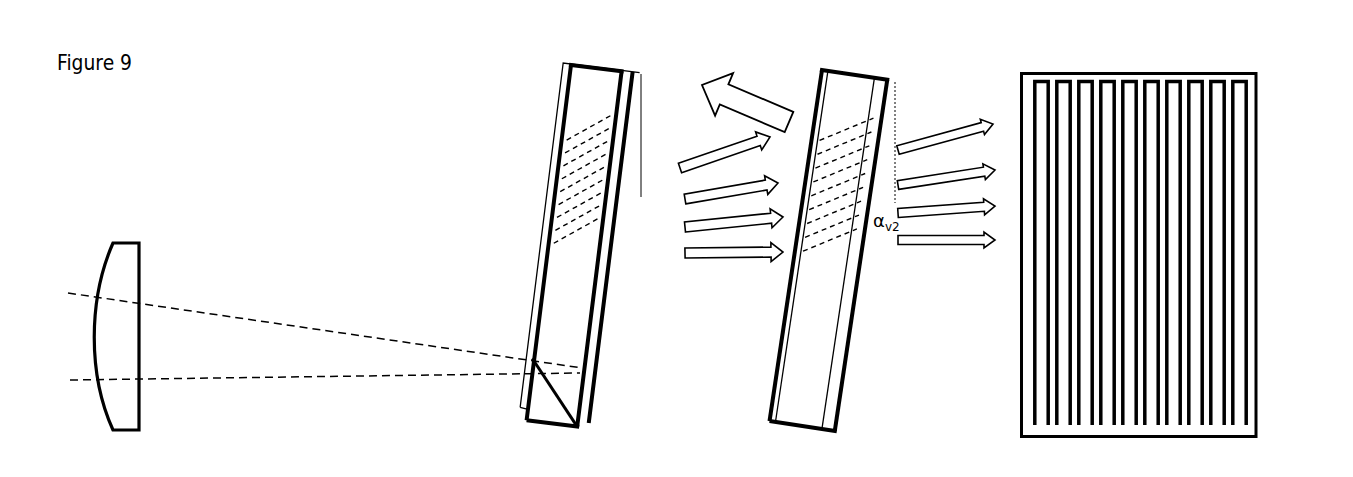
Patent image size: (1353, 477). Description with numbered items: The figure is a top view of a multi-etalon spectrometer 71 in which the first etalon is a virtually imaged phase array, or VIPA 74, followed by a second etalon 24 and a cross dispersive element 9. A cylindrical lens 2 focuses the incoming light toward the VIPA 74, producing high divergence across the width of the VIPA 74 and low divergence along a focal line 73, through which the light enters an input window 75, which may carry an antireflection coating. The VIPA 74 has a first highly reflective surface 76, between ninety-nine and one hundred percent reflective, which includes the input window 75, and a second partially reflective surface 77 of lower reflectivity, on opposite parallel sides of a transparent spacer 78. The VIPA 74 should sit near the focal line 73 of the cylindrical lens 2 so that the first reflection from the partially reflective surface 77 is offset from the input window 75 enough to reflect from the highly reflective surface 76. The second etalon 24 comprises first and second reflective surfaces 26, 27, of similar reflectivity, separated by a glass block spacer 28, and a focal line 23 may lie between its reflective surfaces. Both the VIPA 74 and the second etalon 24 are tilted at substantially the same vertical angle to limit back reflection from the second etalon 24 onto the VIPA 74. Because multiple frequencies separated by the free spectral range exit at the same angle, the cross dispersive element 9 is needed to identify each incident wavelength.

The cylindrical lens 2 is at (122, 257).
The cross dispersive element 9 is at (1170, 438).
The focal line 23 is at (673, 257).
The second etalon 24 is at (802, 73).
The first reflective surface 26 is at (780, 353).
The second reflective surface 27 is at (850, 347).
The spacer 28 is at (843, 90).
The spectrometer 71 is at (467, 229).
The focal line 73 is at (555, 392).
The virtually imaged phase array (VIPA) 74 is at (580, 240).
The input window 75 is at (523, 373).
The first highly reflective surface 76 is at (549, 242).
The second partially reflective surface 77 is at (604, 249).
The transparent spacer 78 is at (574, 246).